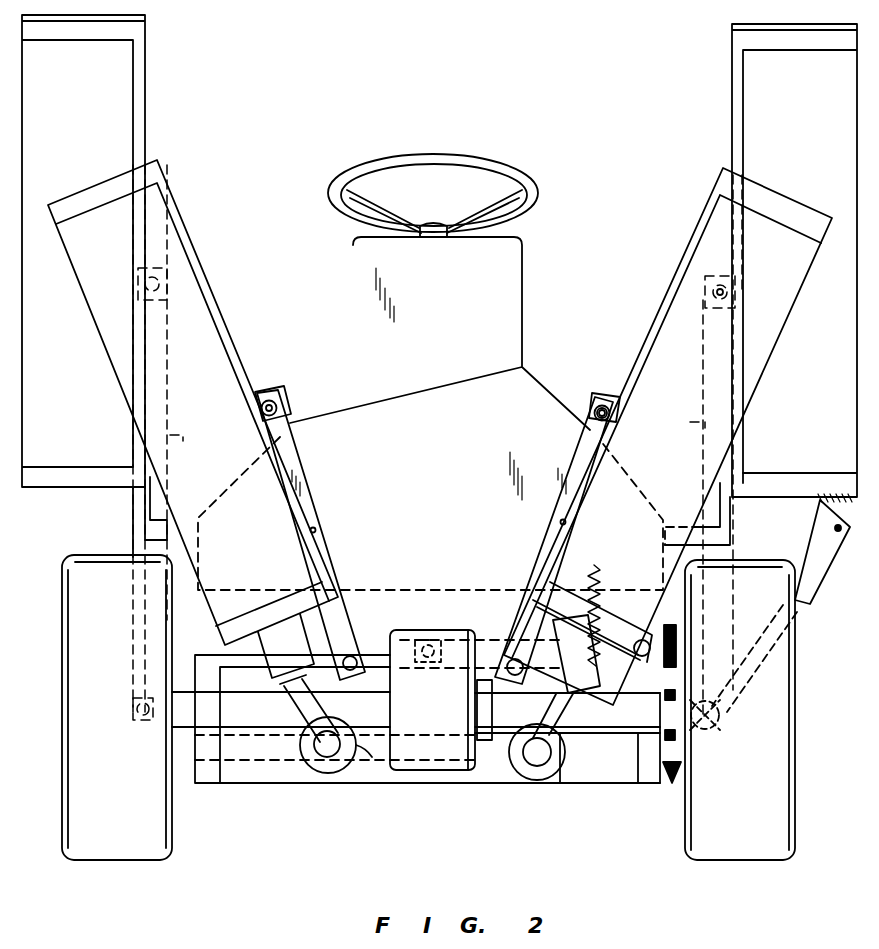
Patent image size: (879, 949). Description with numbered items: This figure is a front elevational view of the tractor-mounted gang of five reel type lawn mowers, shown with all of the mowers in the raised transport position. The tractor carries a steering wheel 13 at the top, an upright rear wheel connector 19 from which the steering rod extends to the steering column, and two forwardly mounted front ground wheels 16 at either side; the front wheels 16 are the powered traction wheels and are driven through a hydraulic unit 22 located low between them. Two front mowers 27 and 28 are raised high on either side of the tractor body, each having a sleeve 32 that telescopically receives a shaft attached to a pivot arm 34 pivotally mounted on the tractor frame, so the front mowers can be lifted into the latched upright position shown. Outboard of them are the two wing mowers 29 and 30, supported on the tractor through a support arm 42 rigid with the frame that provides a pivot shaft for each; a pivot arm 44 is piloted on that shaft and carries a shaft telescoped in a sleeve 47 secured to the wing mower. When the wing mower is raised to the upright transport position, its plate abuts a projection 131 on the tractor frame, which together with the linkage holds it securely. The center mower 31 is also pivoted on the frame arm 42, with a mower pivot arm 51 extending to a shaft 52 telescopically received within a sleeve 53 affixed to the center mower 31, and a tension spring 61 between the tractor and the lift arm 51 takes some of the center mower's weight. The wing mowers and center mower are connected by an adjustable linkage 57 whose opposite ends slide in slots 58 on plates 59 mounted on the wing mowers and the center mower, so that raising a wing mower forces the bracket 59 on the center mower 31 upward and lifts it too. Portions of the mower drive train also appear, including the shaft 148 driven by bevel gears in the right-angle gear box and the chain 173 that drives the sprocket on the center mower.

The steering wheel 13 is at (507, 178).
The front ground wheels 16 is at (175, 843).
The upright rear wheel connector 19 is at (380, 590).
The hydraulic unit 22 is at (468, 768).
The front mower 27 is at (647, 343).
The front mower 28 is at (233, 357).
The wing mower 29 is at (733, 134).
The wing mower 30 is at (133, 95).
The center mower 31 is at (263, 772).
The sleeve 32 is at (593, 402).
The pivot arm 34 is at (571, 478).
The support arm 42 is at (718, 727).
The pivot arm 44 is at (735, 548).
The sleeve 47 is at (717, 305).
The mower pivot arm 51 is at (630, 715).
The shaft 52 is at (424, 638).
The sleeve 53 is at (460, 635).
The adjustable linkage 57 is at (803, 586).
The slots 58 is at (838, 497).
The plates 59 is at (669, 781).
The tension spring 61 is at (601, 585).
The projection 131 is at (132, 500).
The shaft 148 is at (372, 757).
The chain 173 is at (676, 671).